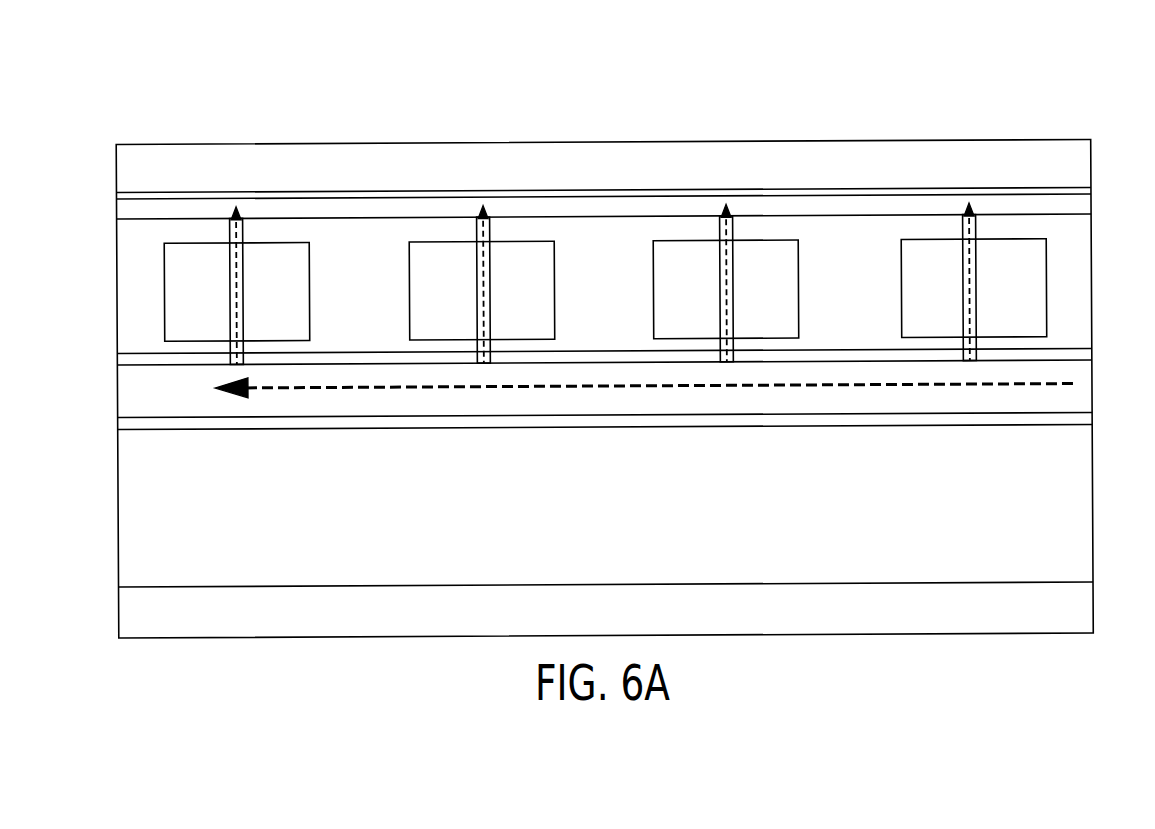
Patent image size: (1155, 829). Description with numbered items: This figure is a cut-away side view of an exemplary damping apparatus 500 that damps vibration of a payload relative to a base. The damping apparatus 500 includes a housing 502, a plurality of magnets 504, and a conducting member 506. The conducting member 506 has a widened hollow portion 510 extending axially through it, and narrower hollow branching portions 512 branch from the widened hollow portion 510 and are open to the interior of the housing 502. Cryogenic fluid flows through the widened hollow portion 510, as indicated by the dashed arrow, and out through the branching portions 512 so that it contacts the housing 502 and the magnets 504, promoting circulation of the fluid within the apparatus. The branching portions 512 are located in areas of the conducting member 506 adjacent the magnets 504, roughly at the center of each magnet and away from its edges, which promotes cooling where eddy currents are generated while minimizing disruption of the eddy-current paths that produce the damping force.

The damping apparatus 500 is at (125, 100).
The housing 502 is at (1082, 503).
The magnets 504 is at (288, 252).
The conducting member 506 is at (1080, 230).
The widened hollow portion 510 is at (210, 407).
The narrow branching portions 512 is at (247, 348).